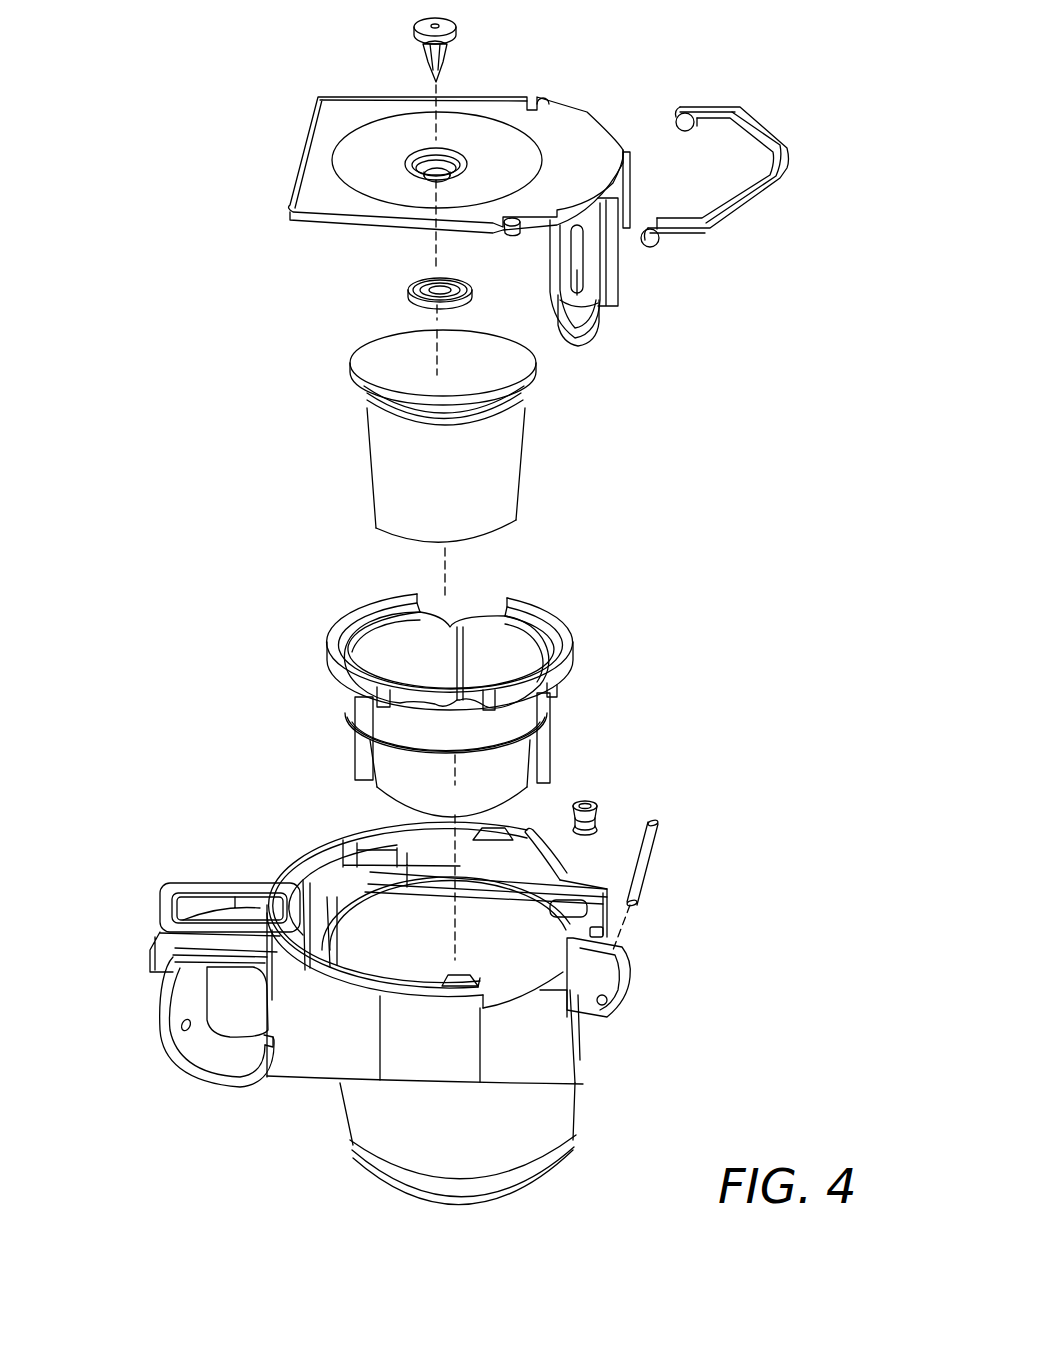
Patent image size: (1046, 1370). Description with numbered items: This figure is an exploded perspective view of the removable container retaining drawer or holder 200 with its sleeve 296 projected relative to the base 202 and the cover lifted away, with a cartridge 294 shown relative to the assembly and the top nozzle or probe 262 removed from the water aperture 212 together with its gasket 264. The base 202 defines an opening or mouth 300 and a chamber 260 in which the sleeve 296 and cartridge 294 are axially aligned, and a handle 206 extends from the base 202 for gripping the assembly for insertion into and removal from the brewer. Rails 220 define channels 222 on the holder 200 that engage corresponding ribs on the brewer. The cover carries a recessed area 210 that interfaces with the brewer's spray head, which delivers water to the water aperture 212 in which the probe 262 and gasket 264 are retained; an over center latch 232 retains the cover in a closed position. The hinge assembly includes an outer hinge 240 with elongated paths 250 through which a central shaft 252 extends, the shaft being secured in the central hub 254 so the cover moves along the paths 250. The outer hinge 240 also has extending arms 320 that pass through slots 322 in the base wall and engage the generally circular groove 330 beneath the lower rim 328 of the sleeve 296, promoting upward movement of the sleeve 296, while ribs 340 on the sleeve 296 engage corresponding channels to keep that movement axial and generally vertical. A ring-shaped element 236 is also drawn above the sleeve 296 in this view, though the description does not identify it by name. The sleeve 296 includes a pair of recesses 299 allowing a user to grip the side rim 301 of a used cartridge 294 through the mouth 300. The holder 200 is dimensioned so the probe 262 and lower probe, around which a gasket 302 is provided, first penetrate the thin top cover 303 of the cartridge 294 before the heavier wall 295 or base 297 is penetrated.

The holder 200 is at (724, 721).
The base 202 is at (351, 1132).
The handle 206 is at (159, 1044).
The recessed area 210 is at (402, 130).
The water aperture 212 is at (452, 160).
The rails 220 is at (417, 843).
The channels 222 is at (513, 862).
The latch 232 is at (723, 217).
The cartridge holder ring 236 is at (557, 667).
The outer hinge 240 is at (560, 278).
The elongated paths 250 is at (583, 267).
The central shaft 252 is at (647, 860).
The central hub 254 is at (617, 980).
The chamber 260 is at (390, 932).
The top probe 262 is at (396, 41).
The gasket 264 is at (396, 288).
The cartridge 294 is at (378, 468).
The wall 295 is at (387, 503).
The sleeve 296 is at (331, 772).
The base 297 is at (403, 540).
The recesses 299 is at (463, 607).
The mouth 300 is at (347, 923).
The side rim 301 is at (352, 377).
The gasket 302 is at (597, 817).
The top cover 303 is at (403, 363).
The extending arms 320 is at (580, 333).
The slots 322 is at (600, 938).
The lower rim 328 is at (530, 722).
The circular groove 330 is at (403, 715).
The ribs 340 is at (537, 763).